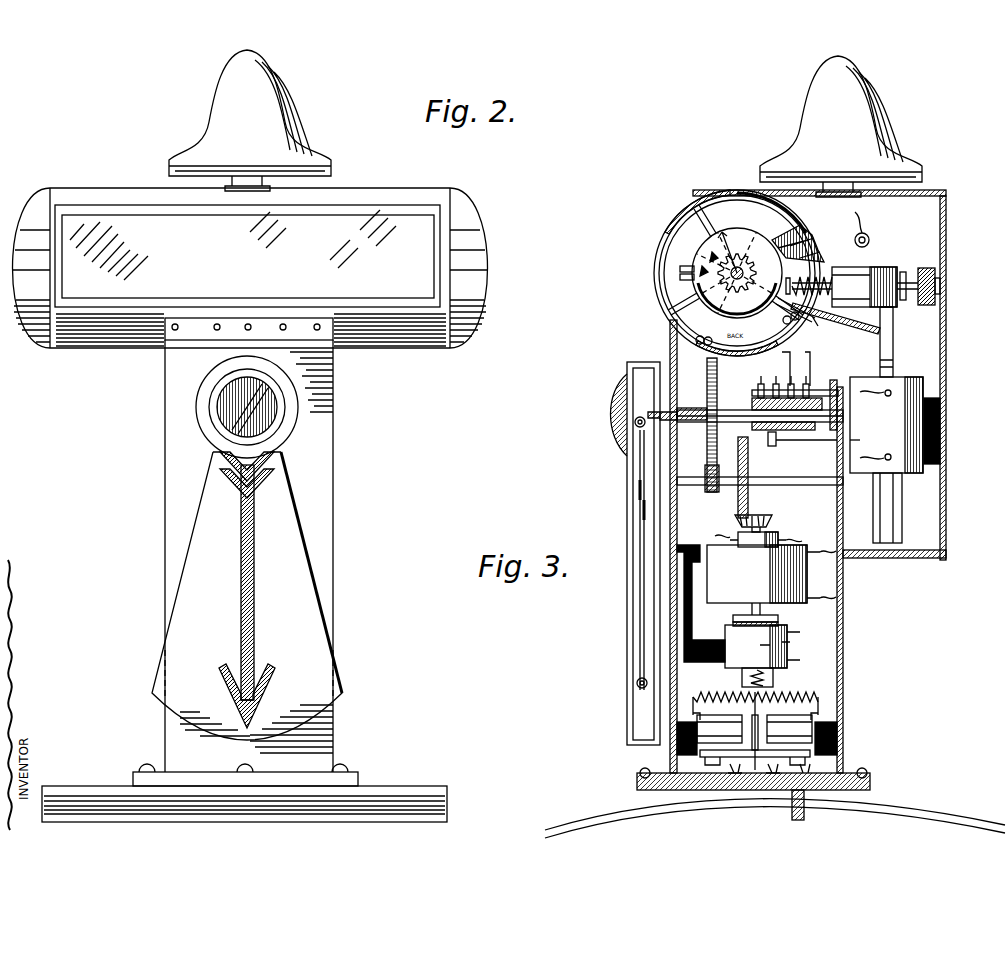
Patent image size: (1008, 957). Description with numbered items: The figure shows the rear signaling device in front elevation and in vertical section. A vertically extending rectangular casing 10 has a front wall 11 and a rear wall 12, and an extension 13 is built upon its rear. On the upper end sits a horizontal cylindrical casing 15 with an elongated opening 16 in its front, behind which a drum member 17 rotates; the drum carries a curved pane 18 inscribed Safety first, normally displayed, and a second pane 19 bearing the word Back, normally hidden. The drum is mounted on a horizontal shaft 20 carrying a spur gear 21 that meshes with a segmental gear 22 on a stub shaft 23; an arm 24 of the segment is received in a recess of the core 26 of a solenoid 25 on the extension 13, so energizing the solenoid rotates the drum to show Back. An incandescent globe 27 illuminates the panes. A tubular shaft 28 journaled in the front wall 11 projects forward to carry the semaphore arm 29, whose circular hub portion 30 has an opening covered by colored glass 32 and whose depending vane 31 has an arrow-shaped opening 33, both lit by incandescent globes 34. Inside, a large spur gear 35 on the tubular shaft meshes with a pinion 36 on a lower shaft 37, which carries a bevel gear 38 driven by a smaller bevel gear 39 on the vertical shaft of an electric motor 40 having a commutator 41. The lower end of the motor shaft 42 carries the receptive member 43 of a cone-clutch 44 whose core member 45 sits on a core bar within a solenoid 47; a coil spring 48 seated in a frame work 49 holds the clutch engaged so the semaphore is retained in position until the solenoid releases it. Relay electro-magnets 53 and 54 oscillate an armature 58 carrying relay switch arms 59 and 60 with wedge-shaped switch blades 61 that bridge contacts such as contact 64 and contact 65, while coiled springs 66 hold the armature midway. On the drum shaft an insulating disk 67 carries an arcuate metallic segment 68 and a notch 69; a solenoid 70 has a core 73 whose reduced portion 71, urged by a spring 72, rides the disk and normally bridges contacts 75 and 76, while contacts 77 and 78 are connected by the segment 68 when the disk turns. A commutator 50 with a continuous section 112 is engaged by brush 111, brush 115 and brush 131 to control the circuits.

In FIG. 3, the casing 10 is at (845, 626).
In FIG. 3, the front wall 11 is at (670, 524).
In FIG. 3, the rear wall 12 is at (843, 594).
In FIG. 3, the extension 13 is at (946, 380).
In FIG. 2, the cylindrical casing 15 is at (404, 197).
In FIG. 2, the elongated opening 16 is at (436, 258).
In FIG. 3, the drum member 17 is at (700, 230).
In FIG. 2, the curved pane of transparent material 18 is at (180, 228).
In FIG. 3, the curved pane of transparent material 18 is at (692, 250).
In FIG. 2, the second pane 19 is at (278, 118).
In FIG. 3, the second pane 19 is at (870, 109).
In FIG. 3, the horizontal shaft 20 is at (737, 266).
In FIG. 3, the spur gear 21 is at (750, 262).
In FIG. 3, the segmental gear 22 is at (798, 243).
In FIG. 3, the stub shaft 23 is at (862, 332).
In FIG. 3, the arm 24 is at (898, 332).
In FIG. 3, the solenoid 25 is at (886, 425).
In FIG. 3, the core 26 is at (900, 499).
In FIG. 3, the incandescent globe 27 is at (870, 238).
In FIG. 3, the tubular shaft 28 is at (690, 398).
In FIG. 3, the semaphore arm 29 is at (627, 378).
In FIG. 2, the hub portion 30 is at (293, 427).
In FIG. 2, the vane 31 is at (283, 522).
In FIG. 2, the colored glass 32 is at (278, 404).
In FIG. 3, the colored glass 32 is at (615, 410).
In FIG. 2, the opening 33 is at (264, 608).
In FIG. 3, the incandescent globes 34 is at (638, 686).
In FIG. 3, the spur gear 35 is at (706, 445).
In FIG. 3, the pinion 36 is at (710, 494).
In FIG. 3, the shaft 37 is at (776, 482).
In FIG. 3, the bevel gear 38 is at (749, 490).
In FIG. 3, the bevel gear 39 is at (770, 524).
In FIG. 3, the electric motor 40 is at (771, 574).
In FIG. 3, the commutator 41 is at (758, 552).
In FIG. 3, the shaft 42 is at (778, 618).
In FIG. 3, the receptive member 43 is at (787, 640).
In FIG. 3, the cone-clutch 44 is at (705, 632).
In FIG. 3, the core member 45 is at (783, 646).
In FIG. 3, the solenoid 47 is at (762, 646).
In FIG. 3, the coil spring 48 is at (773, 678).
In FIG. 3, the frame work 49 is at (720, 696).
In FIG. 3, the commutator 50 is at (762, 393).
In FIG. 3, the electro-magnet 53 is at (719, 729).
In FIG. 3, the electro-magnet 54 is at (789, 729).
In FIG. 3, the armature 58 is at (755, 775).
In FIG. 3, the relay switch arm 59 is at (772, 775).
In FIG. 3, the relay switch arm 60 is at (733, 775).
In FIG. 3, the switch blades 61 is at (810, 754).
In FIG. 3, the contact 64 is at (690, 790).
In FIG. 3, the contact 65 is at (806, 775).
In FIG. 3, the coiled springs 66 is at (700, 703).
In FIG. 3, the disk 67 is at (694, 225).
In FIG. 3, the arcuate metallic segment 68 is at (737, 310).
In FIG. 3, the notch 69 is at (713, 236).
In FIG. 3, the solenoid 70 is at (864, 279).
In FIG. 3, the reduced portion 71 is at (789, 366).
In FIG. 3, the spring 72 is at (812, 284).
In FIG. 3, the core 73 is at (797, 308).
In FIG. 3, the contact 75 is at (936, 280).
In FIG. 3, the contact 76 is at (905, 300).
In FIG. 3, the contact 77 is at (683, 268).
In FIG. 3, the brush 78 is at (683, 278).
In FIG. 3, the brush 111 is at (756, 416).
In FIG. 3, the section 112 is at (832, 441).
In FIG. 3, the brush 115 is at (794, 449).
In FIG. 3, the brush 131 is at (817, 367).